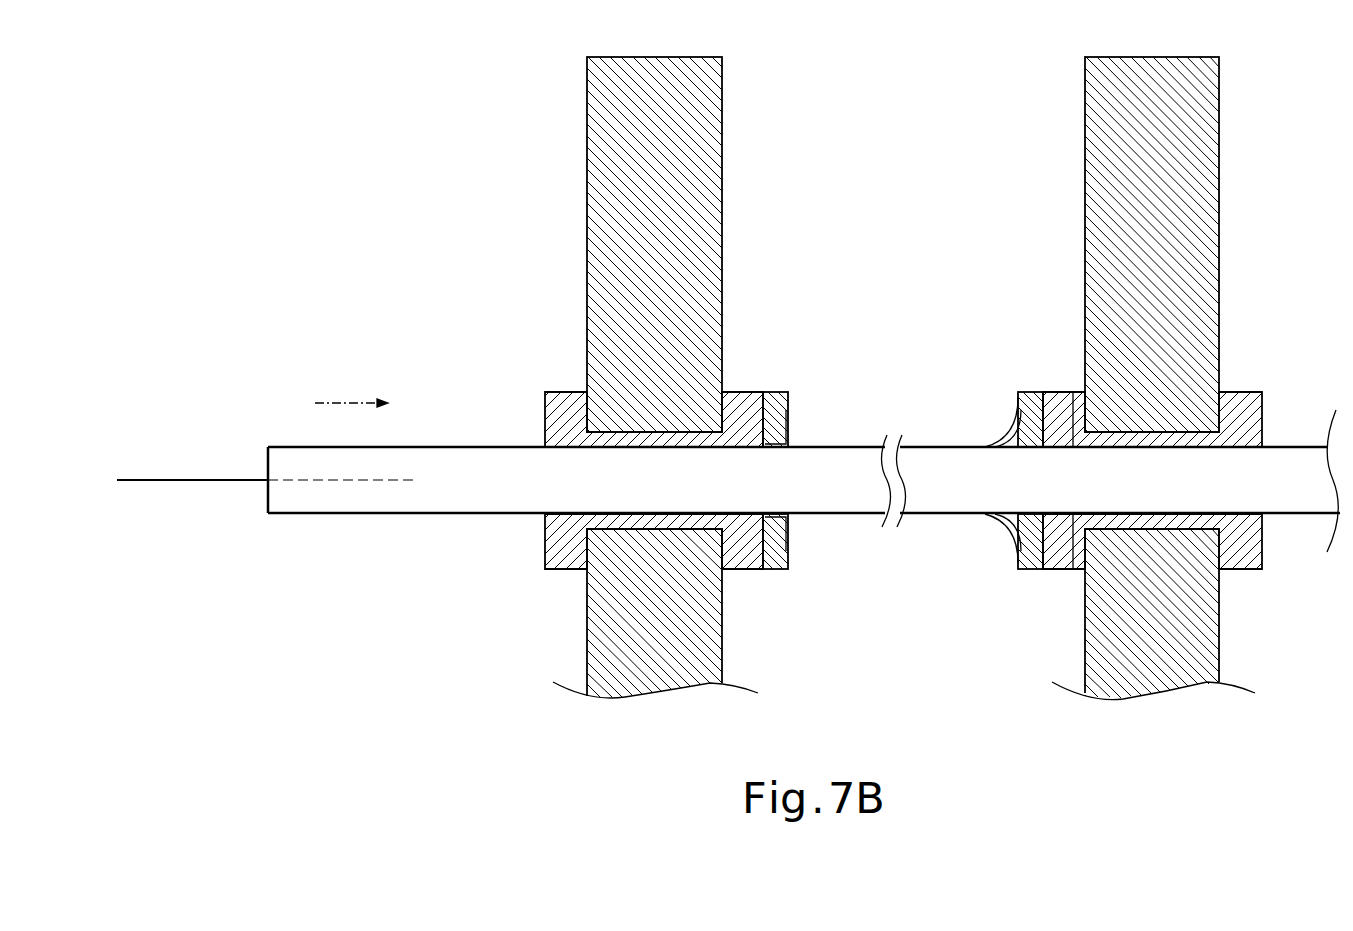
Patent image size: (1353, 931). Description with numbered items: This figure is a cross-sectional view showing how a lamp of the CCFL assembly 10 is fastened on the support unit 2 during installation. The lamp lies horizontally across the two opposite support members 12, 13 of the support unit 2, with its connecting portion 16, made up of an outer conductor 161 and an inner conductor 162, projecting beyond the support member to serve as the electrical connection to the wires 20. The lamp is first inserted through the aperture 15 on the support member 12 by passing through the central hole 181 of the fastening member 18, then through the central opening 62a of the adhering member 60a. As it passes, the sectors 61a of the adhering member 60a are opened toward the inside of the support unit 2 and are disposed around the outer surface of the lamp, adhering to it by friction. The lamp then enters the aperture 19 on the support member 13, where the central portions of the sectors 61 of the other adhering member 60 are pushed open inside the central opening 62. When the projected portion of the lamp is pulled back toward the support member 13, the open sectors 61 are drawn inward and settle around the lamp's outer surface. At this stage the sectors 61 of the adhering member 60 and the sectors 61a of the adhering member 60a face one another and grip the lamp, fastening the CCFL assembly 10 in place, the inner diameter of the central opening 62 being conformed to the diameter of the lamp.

The support unit 2 is at (1172, 378).
The CCFL assembly 10 is at (438, 498).
The support member 12 is at (1190, 242).
The support member 13 is at (700, 225).
The aperture 15 is at (1185, 430).
The connecting portion 16 is at (282, 531).
The outer conductor 161 is at (248, 480).
The inner conductor 162 is at (318, 482).
The fastening member 18 is at (1060, 405).
The central hole 181 is at (1073, 392).
The aperture 19 is at (693, 420).
The wires 20 is at (192, 481).
The adhering member 60 is at (788, 392).
The adhering member 60a is at (1018, 395).
The sectors 61 is at (790, 436).
The sectors 61a is at (1008, 430).
The central opening 62 is at (771, 512).
The central opening 62a is at (1033, 516).